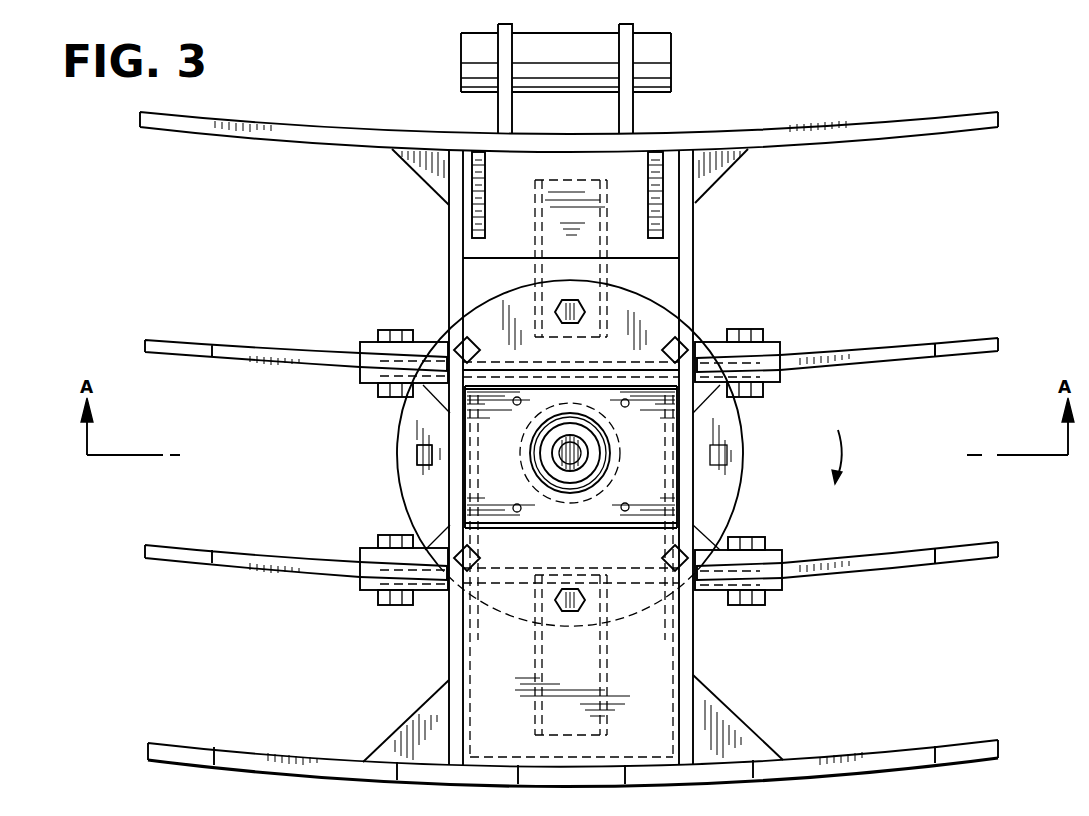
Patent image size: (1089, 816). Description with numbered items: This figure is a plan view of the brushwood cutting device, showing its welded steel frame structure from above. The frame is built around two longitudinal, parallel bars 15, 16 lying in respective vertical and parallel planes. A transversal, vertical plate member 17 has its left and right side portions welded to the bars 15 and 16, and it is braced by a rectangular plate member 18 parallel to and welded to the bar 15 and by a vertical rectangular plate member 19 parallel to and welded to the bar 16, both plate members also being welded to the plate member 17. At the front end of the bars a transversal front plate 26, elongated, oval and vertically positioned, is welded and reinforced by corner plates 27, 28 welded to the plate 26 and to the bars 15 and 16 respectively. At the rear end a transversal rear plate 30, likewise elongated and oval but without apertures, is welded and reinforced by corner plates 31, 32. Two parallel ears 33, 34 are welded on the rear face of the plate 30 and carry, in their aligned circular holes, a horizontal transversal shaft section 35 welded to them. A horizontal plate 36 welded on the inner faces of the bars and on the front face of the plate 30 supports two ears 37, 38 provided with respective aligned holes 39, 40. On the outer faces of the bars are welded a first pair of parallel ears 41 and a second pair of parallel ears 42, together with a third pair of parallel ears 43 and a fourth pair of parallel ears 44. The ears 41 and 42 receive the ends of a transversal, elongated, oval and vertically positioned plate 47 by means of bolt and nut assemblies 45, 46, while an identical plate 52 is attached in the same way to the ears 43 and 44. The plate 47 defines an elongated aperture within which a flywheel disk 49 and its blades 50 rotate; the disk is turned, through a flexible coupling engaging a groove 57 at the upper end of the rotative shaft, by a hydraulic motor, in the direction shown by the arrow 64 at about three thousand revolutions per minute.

The longitudinal bar 15 is at (460, 643).
The longitudinal bar 16 is at (690, 652).
The transversal vertical plate member 17 is at (690, 400).
The right rectangular plate member 18 is at (465, 480).
The right vertical rectangular plate member 19 is at (672, 478).
The transversal front plate 26 is at (410, 772).
The corner plate 27 is at (405, 735).
The corner plate 28 is at (745, 735).
The transversal rear plate 30 is at (285, 128).
The corner plate 31 is at (402, 177).
The corner plate 32 is at (712, 170).
The ear 33 is at (498, 120).
The ear 34 is at (633, 119).
The horizontal transversal shaft section 35 is at (667, 53).
The horizontal plate 36 is at (663, 250).
The ear 37 is at (472, 218).
The ear 38 is at (660, 218).
The hole 39 is at (483, 197).
The hole 40 is at (657, 192).
The first pair of parallel ears 41 is at (360, 360).
The second pair of parallel ears 42 is at (780, 355).
The third pair of parallel ears 43 is at (360, 572).
The fourth pair of parallel ears 44 is at (795, 580).
The bolt and nut assembly 45 is at (395, 330).
The bolt and nut assembly 46 is at (740, 330).
The transversal plate 47 is at (980, 340).
The flywheel disk 49 is at (415, 433).
The blade 50 is at (590, 717).
The plate 52 is at (970, 556).
The groove 57 is at (562, 183).
The arrow 64 is at (845, 450).